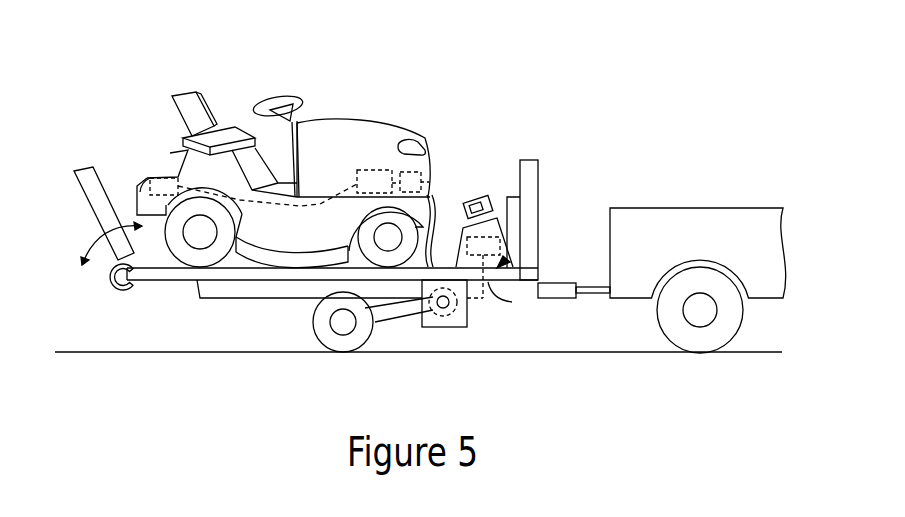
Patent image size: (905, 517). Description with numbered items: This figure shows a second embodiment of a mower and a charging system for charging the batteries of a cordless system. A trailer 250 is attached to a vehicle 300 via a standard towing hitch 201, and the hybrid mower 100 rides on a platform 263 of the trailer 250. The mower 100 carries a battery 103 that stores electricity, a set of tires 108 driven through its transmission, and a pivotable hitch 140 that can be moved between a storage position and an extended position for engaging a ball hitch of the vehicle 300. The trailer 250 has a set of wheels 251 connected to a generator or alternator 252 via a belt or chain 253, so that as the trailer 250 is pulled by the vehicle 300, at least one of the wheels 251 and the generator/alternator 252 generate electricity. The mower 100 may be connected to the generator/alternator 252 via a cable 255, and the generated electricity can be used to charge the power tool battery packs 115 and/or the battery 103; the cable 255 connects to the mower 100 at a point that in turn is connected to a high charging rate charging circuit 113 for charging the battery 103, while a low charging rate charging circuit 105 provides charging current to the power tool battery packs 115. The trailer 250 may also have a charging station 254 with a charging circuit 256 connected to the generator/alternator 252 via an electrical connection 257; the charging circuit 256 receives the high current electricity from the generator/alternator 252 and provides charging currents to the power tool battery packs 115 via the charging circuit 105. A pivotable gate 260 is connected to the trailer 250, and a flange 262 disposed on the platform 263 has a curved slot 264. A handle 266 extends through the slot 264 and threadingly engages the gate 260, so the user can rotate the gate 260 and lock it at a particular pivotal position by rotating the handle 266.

The hybrid mower 100 is at (318, 138).
The battery 103 is at (368, 170).
The low charging rate charging circuit 105 is at (156, 177).
The set of tires 108 is at (200, 208).
The high charging rate charging circuit 113 is at (403, 172).
The power tool battery packs 115 is at (147, 182).
The pivotable hitch 140 is at (427, 177).
The standard towing hitch 201 is at (592, 292).
The trailer 250 is at (538, 262).
The set of wheels 251 is at (315, 330).
The generator or alternator 252 is at (447, 322).
The belt or chain 253 is at (404, 318).
The charging station 254 is at (508, 198).
The cable 255 is at (440, 215).
The charging circuit 256 is at (505, 259).
The electrical connection 257 is at (500, 298).
The pivotable gate 260 is at (103, 222).
The flange 262 is at (108, 283).
The platform 263 is at (227, 281).
The curved slot 264 is at (118, 291).
The handle 266 is at (136, 281).
The vehicle 300 is at (660, 222).